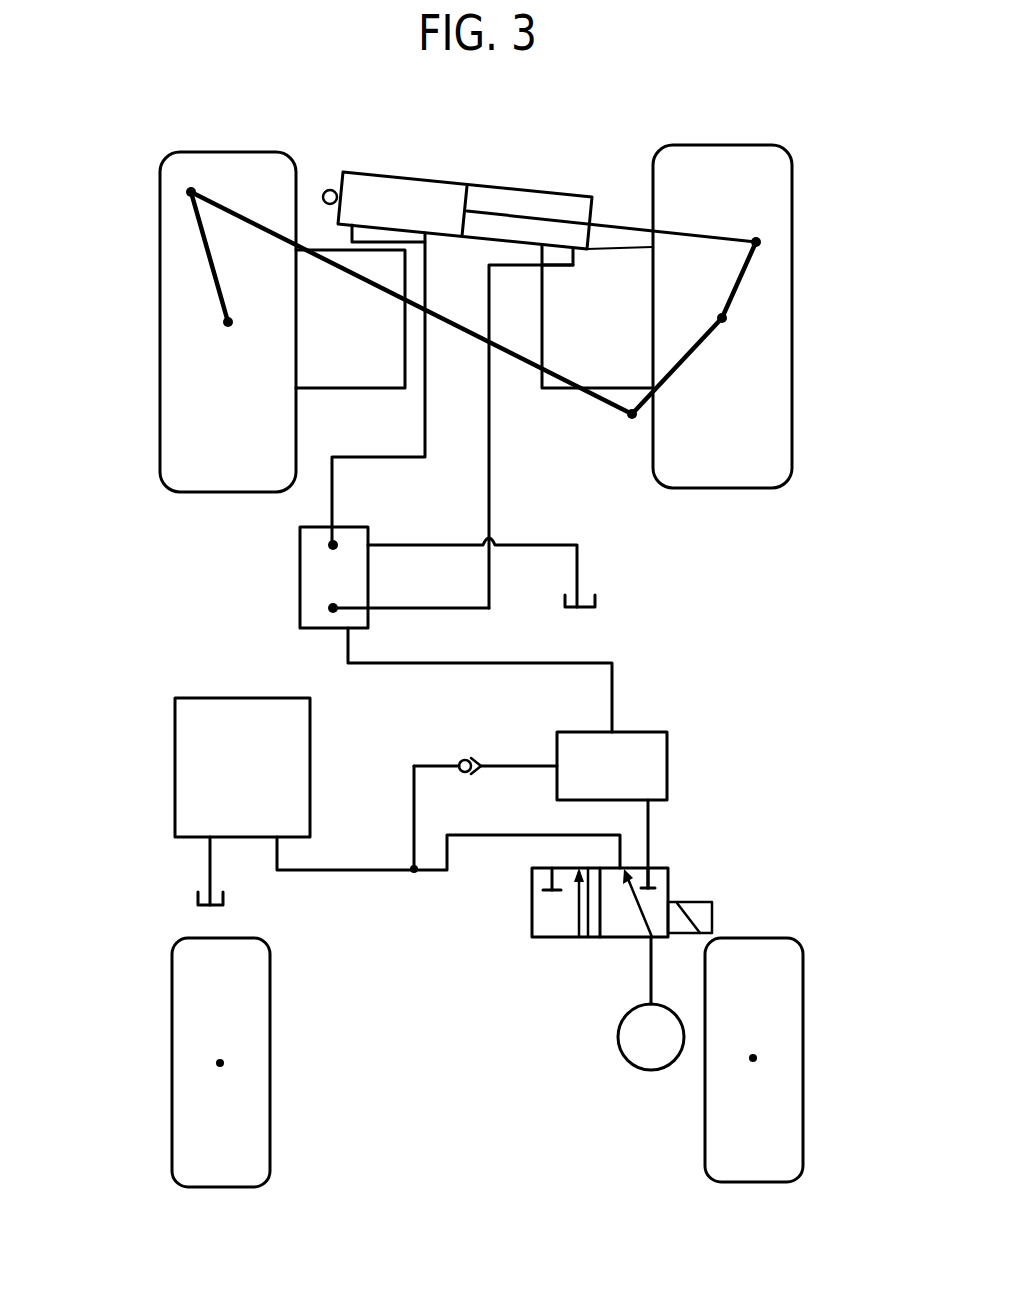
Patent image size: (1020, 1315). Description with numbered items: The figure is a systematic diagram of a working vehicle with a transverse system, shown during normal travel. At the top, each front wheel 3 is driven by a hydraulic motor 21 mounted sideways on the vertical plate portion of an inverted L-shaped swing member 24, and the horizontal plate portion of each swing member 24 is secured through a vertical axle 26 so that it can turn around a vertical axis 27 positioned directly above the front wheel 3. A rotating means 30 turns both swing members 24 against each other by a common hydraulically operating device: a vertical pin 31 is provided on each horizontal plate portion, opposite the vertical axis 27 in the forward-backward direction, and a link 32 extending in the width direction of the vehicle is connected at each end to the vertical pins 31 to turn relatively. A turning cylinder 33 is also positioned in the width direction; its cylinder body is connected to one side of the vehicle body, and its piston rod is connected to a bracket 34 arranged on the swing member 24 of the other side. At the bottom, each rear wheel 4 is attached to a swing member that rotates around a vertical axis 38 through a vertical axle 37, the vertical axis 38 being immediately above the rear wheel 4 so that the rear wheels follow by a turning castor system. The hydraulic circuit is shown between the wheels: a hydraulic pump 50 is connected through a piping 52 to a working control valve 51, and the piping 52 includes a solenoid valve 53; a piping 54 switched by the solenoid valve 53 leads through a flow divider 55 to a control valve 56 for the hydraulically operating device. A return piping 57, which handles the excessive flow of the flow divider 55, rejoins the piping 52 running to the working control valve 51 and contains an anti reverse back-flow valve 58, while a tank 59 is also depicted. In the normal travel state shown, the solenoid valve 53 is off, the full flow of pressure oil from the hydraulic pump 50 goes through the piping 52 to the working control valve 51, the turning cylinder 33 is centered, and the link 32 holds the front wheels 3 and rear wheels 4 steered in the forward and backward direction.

The front wheel 3 is at (198, 440).
The rear wheel 4 is at (198, 1117).
The hydraulic motor 21 is at (318, 362).
The swing member 24 is at (207, 255).
The vertical axle 26 is at (470, 314).
The vertical axis 27 is at (228, 322).
The rotating means 30 is at (470, 312).
The vertical pin 31 is at (192, 192).
The link 32 is at (450, 327).
The turning cylinder 33 is at (432, 172).
The bracket 34 is at (752, 266).
The vertical axle 37 is at (568, 1049).
The vertical axis 38 is at (220, 1063).
The hydraulic pump 50 is at (648, 1035).
The working control valve 51 is at (208, 762).
The piping 52 is at (437, 872).
The solenoid valve 53 is at (672, 878).
The piping 54 is at (613, 668).
The flow divider 55 is at (668, 762).
The control valve for hydraulically operating device 56 is at (300, 578).
The return piping 57 is at (408, 815).
The anti reverse back-flow valve 58 is at (457, 760).
The tank 59 is at (598, 602).